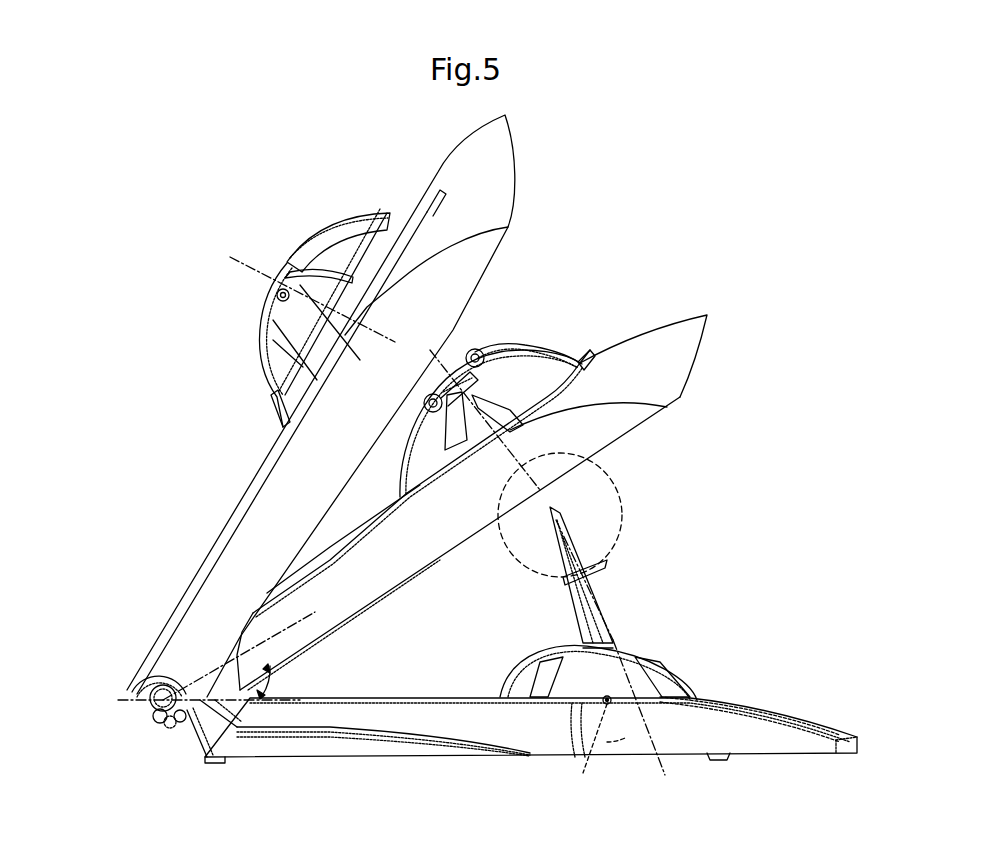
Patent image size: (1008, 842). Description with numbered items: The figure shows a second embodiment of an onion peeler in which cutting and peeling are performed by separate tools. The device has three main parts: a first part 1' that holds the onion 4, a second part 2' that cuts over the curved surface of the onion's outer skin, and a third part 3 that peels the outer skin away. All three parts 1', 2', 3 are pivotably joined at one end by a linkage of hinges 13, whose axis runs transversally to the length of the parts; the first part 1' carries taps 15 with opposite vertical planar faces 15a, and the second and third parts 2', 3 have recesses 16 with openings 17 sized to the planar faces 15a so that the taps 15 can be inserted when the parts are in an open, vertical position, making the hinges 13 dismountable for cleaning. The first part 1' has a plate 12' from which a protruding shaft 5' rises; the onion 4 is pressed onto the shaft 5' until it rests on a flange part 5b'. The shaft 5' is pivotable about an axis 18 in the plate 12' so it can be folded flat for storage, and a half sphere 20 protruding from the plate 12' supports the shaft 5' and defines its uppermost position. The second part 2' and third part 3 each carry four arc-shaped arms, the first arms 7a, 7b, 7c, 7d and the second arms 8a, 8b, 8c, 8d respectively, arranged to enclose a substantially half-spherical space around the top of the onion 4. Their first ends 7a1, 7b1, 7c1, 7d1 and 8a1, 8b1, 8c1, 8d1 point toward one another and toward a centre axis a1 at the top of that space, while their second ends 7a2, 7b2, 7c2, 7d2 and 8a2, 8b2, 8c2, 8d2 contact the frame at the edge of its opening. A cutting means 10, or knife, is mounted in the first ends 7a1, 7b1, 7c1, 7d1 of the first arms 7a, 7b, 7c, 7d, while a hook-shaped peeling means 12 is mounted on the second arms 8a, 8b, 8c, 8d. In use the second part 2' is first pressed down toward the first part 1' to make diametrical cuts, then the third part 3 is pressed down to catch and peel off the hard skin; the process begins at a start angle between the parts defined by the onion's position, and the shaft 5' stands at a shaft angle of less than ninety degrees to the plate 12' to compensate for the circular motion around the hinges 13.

The first part 1' is at (535, 708).
The second part 2' is at (500, 502).
The third part 3 is at (453, 167).
The onion 4 is at (621, 505).
The protruding shaft 5' is at (623, 575).
The flange part 5b' is at (632, 559).
The first arm 7a is at (610, 353).
The first arm 7b is at (610, 353).
The first arm 7c is at (610, 353).
The first arm 7d is at (610, 353).
The first end of first arm 7a1 is at (604, 289).
The first end of first arm 7b1 is at (604, 289).
The first end of first arm 7c1 is at (604, 289).
The first end of first arm 7d1 is at (497, 347).
The second end of first arm 7a2 is at (699, 325).
The second end of first arm 7b2 is at (699, 325).
The second end of first arm 7c2 is at (699, 325).
The second end of first arm 7d2 is at (583, 355).
The second arm 8a is at (213, 307).
The second arm 8b is at (213, 307).
The second arm 8c is at (213, 307).
The second arm 8d is at (213, 307).
The first end of second arm 8a1 is at (249, 223).
The first end of second arm 8b1 is at (249, 223).
The first end of second arm 8c1 is at (249, 223).
The first end of second arm 8d1 is at (300, 248).
The second end of second arm 8a2 is at (163, 420).
The second end of second arm 8b2 is at (163, 420).
The second end of second arm 8c2 is at (163, 420).
The second end of second arm 8d2 is at (278, 398).
The cutting means 10 is at (481, 352).
The peeling means 12 is at (250, 298).
The plate 12' is at (750, 692).
The hinge 13 is at (150, 715).
The tap 15 is at (137, 697).
The planar face 15a is at (150, 700).
The recess 16 is at (175, 726).
The opening 17 is at (160, 727).
The axis 18 is at (589, 747).
The half sphere 20 is at (683, 677).
The centre axis a1 is at (245, 262).